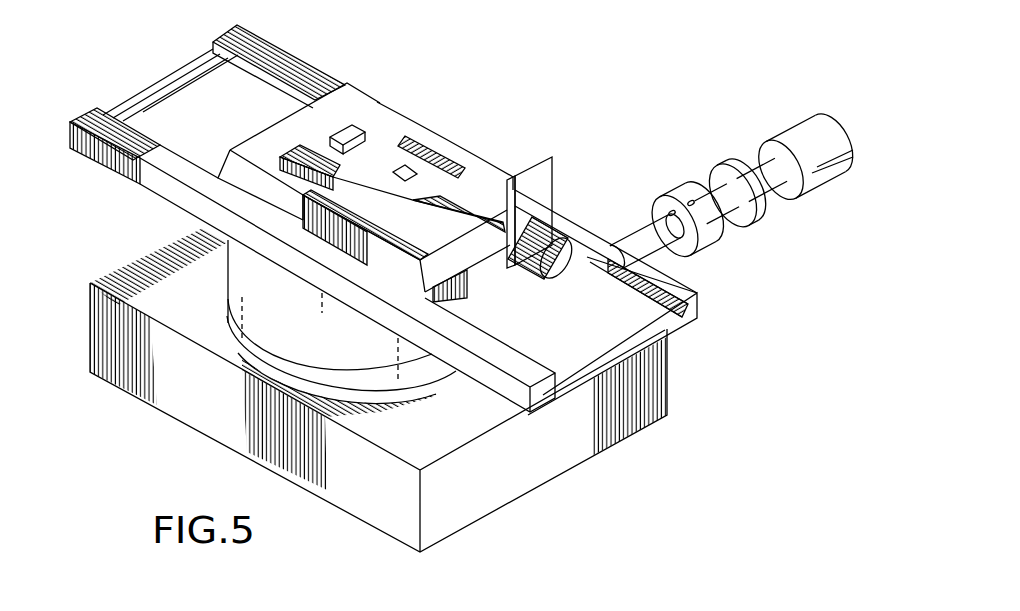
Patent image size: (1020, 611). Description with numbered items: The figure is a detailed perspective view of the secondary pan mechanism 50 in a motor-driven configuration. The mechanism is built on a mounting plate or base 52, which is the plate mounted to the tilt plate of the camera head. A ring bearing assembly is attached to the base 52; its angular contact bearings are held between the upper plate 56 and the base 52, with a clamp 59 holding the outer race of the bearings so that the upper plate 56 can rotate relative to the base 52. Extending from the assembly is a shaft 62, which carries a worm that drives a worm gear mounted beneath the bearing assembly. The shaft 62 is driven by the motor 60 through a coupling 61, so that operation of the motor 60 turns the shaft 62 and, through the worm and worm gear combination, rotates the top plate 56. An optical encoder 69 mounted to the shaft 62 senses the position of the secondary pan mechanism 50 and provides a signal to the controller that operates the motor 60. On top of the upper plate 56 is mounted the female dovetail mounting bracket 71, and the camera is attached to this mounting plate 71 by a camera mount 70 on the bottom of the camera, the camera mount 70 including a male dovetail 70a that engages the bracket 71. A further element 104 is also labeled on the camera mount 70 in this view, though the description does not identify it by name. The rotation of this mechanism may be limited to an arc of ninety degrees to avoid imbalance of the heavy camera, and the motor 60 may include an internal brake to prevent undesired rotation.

The secondary pan mechanism 50 is at (605, 72).
The base 52 is at (150, 268).
The upper plate 56 is at (296, 313).
The clamp 59 is at (332, 381).
The motor 60 is at (802, 140).
The coupling 61 is at (708, 238).
The shaft 62 is at (640, 243).
The optical encoder 69 is at (720, 177).
The camera mount 70 is at (387, 143).
The male dovetail 70a is at (481, 281).
The female dovetail mounting bracket 71 is at (297, 80).
The guide rib 104 is at (483, 157).